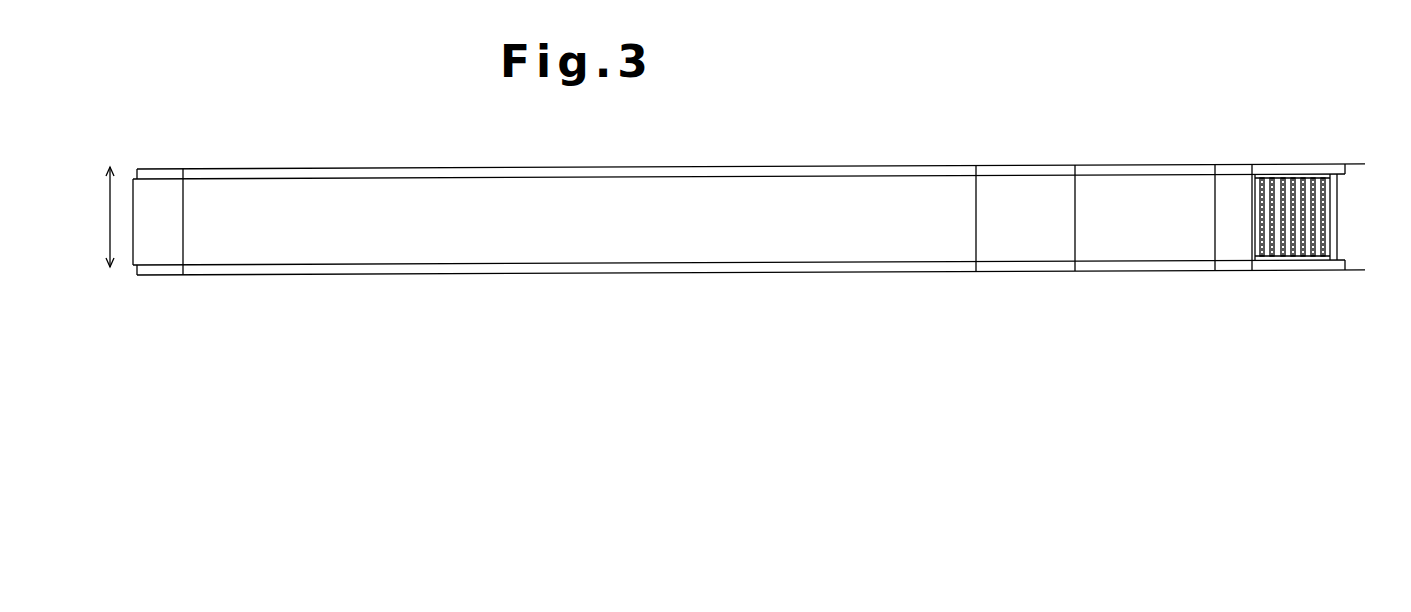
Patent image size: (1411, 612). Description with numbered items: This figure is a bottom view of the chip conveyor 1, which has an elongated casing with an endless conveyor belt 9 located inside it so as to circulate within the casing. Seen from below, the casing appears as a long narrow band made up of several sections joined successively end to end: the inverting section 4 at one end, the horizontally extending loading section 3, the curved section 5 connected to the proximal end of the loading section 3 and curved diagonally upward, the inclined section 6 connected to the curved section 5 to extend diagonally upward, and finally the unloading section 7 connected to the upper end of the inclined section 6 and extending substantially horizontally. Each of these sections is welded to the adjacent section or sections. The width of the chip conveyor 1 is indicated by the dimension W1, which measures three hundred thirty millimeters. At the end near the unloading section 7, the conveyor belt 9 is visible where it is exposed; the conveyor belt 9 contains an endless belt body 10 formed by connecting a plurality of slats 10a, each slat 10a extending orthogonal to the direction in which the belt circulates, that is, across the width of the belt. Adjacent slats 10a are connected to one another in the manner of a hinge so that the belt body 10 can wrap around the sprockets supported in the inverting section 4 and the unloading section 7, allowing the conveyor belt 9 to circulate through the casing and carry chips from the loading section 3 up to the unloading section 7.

The chip conveyor 1 is at (800, 153).
The loading section 3 is at (567, 273).
The inverting section 4 is at (138, 192).
The curved section 5 is at (1003, 272).
The inclined section 6 is at (1117, 271).
The unloading section 7 is at (1270, 270).
The conveyor belt 9 is at (1252, 203).
The belt body 10 is at (1331, 215).
The slats 10a is at (1288, 178).
The width W1 is at (113, 222).